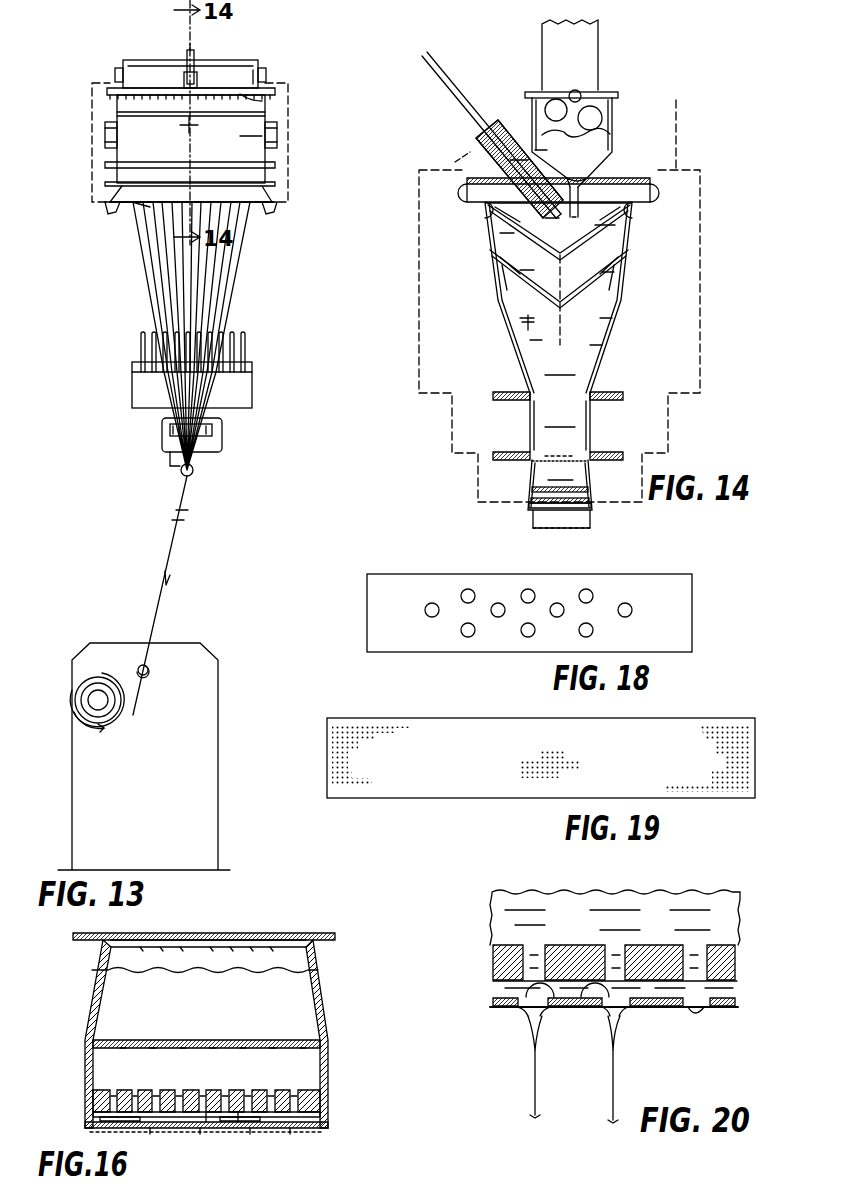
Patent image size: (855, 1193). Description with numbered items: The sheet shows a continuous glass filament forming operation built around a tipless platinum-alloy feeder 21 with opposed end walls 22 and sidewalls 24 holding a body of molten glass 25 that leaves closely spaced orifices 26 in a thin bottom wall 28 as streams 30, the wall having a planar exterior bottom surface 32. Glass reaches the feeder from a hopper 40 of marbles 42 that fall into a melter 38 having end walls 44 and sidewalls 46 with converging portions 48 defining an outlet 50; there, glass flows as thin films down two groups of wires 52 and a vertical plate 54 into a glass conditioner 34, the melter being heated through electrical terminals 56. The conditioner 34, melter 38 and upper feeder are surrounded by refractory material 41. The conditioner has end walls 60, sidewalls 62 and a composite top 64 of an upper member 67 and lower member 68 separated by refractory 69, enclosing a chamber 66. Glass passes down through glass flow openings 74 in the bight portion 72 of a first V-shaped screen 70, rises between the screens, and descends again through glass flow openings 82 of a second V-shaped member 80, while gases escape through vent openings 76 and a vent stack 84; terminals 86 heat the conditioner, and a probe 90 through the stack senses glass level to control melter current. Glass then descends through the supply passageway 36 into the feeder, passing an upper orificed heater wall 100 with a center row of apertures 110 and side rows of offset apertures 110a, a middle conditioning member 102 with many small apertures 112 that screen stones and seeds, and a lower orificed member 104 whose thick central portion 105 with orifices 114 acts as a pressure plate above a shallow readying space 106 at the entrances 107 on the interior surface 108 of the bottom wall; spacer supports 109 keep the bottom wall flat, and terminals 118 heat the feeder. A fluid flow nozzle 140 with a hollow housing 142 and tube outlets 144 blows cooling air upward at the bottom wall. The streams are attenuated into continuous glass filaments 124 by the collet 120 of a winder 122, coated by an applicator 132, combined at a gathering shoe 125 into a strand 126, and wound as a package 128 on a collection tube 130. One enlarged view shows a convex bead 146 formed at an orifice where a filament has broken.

In FIG. 13, the feeder 21 is at (122, 191).
In FIG. 14, the feeder 21 is at (526, 480).
In FIG. 16, the feeder 21 is at (322, 930).
In FIG. 13, the end walls 22 is at (114, 198).
In FIG. 13, the sidewalls 24 is at (222, 190).
In FIG. 14, the sidewalls 24 is at (530, 472).
In FIG. 16, the sidewalls 24 is at (88, 1020).
In FIG. 14, the body of molten glass 25 is at (572, 416).
In FIG. 20, the body of molten glass 25 is at (540, 902).
In FIG. 16, the orifices 26 is at (228, 1130).
In FIG. 20, the orifices 26 is at (522, 1013).
In FIG. 13, the bottom wall 28 is at (122, 204).
In FIG. 14, the bottom wall 28 is at (588, 510).
In FIG. 16, the bottom wall 28 is at (160, 1130).
In FIG. 20, the bottom wall 28 is at (498, 1009).
In FIG. 13, the streams 30 is at (248, 207).
In FIG. 20, the streams 30 is at (525, 1024).
In FIG. 13, the exterior bottom surface 32 is at (162, 214).
In FIG. 14, the exterior bottom surface 32 is at (552, 522).
In FIG. 16, the exterior bottom surface 32 is at (200, 1131).
In FIG. 13, the glass conditioner 34 is at (148, 128).
In FIG. 14, the glass conditioner 34 is at (636, 286).
In FIG. 14, the supply passageway 36 is at (548, 412).
In FIG. 13, the melter 38 is at (125, 52).
In FIG. 14, the melter 38 is at (615, 114).
In FIG. 14, the hopper 40 is at (540, 38).
In FIG. 13, the refractory material 41 is at (92, 82).
In FIG. 14, the refractory material 41 is at (676, 100).
In FIG. 14, the marbles 42 is at (552, 98).
In FIG. 13, the end walls 44 is at (256, 74).
In FIG. 13, the sidewalls 46 is at (155, 70).
In FIG. 14, the sidewalls 46 is at (536, 112).
In FIG. 14, the lower converging portion 48 is at (586, 180).
In FIG. 14, the outlet 50 is at (582, 190).
In FIG. 13, the wires 52 is at (262, 101).
In FIG. 14, the wires 52 is at (615, 224).
In FIG. 14, the plate 54 is at (700, 228).
In FIG. 13, the electrical terminals 56 is at (115, 73).
In FIG. 13, the end walls 60 is at (105, 142).
In FIG. 13, the sidewalls 62 is at (240, 136).
In FIG. 14, the sidewalls 62 is at (505, 302).
In FIG. 13, the composite top 64 is at (181, 88).
In FIG. 14, the composite top 64 is at (467, 188).
In FIG. 14, the chamber 66 is at (526, 323).
In FIG. 14, the upper member 67 is at (500, 162).
In FIG. 14, the lower member 68 is at (465, 200).
In FIG. 14, the refractory 69 is at (455, 152).
In FIG. 14, the first V-shaped screen 70 is at (540, 238).
In FIG. 14, the bight portion 72 is at (598, 234).
In FIG. 14, the glass flow openings 74 is at (545, 302).
In FIG. 14, the vent openings 76 is at (632, 206).
In FIG. 14, the second V-shaped member 80 is at (530, 286).
In FIG. 14, the glass flow openings 82 is at (520, 274).
In FIG. 13, the vent stack 84 is at (198, 80).
In FIG. 14, the vent stack 84 is at (500, 125).
In FIG. 13, the electrical terminals 86 is at (105, 132).
In FIG. 13, the probe 90 is at (196, 60).
In FIG. 14, the probe 90 is at (440, 28).
In FIG. 14, the upper orificed heater wall 100 is at (572, 462).
In FIG. 18, the upper orificed heater wall 100 is at (364, 602).
In FIG. 16, the upper orificed heater wall 100 is at (212, 940).
In FIG. 14, the middle conditioning member 102 is at (534, 489).
In FIG. 19, the middle conditioning member 102 is at (336, 715).
In FIG. 16, the middle conditioning member 102 is at (207, 1040).
In FIG. 16, the lower orificed member 104 is at (108, 1090).
In FIG. 16, the orificed central portion 105 is at (163, 1090).
In FIG. 20, the orificed central portion 105 is at (588, 945).
In FIG. 14, the molten glass readying space 106 is at (538, 505).
In FIG. 16, the molten glass readying space 106 is at (320, 1115).
In FIG. 20, the molten glass readying space 106 is at (715, 988).
In FIG. 16, the entrances 107 is at (252, 1130).
In FIG. 20, the entrances 107 is at (540, 1013).
In FIG. 16, the interior surface 108 is at (100, 1119).
In FIG. 20, the interior surface 108 is at (496, 996).
In FIG. 16, the spacer supports 109 is at (211, 1112).
In FIG. 18, the apertures 110 is at (430, 613).
In FIG. 14, the offset apertures 110a is at (572, 458).
In FIG. 18, the offset apertures 110a is at (466, 594).
In FIG. 19, the apertures 112 is at (350, 728).
In FIG. 16, the apertures 112 is at (230, 1040).
In FIG. 16, the orifices 114 is at (182, 1090).
In FIG. 20, the orifices 114 is at (700, 950).
In FIG. 13, the terminals 118 is at (108, 210).
In FIG. 13, the collet 120 is at (100, 717).
In FIG. 13, the winder 122 is at (218, 643).
In FIG. 13, the continuous glass filaments 124 is at (222, 268).
In FIG. 20, the continuous glass filaments 124 is at (610, 1102).
In FIG. 13, the gathering shoe 125 is at (182, 474).
In FIG. 13, the strand 126 is at (176, 520).
In FIG. 13, the wound package 128 is at (129, 655).
In FIG. 13, the collection tube 130 is at (78, 690).
In FIG. 13, the applicator 132 is at (158, 438).
In FIG. 13, the fluid flow nozzle 140 is at (132, 364).
In FIG. 13, the hollow housing 142 is at (148, 388).
In FIG. 13, the tube outlets 144 is at (162, 350).
In FIG. 20, the bead 146 is at (696, 1014).